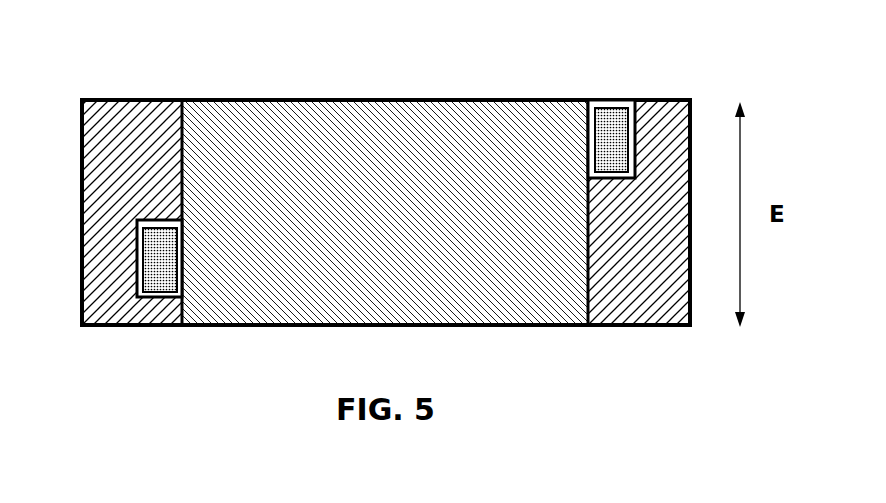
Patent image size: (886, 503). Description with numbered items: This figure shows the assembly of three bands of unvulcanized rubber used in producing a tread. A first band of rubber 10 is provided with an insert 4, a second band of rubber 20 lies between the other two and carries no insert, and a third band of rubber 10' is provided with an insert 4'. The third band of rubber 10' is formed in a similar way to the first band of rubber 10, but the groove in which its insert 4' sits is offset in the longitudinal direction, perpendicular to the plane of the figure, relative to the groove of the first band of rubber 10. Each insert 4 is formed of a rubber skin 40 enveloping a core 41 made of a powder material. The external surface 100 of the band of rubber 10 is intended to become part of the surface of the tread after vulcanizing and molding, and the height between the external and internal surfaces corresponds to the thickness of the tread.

The external surface 100 is at (135, 95).
The band of rubber 10 is at (126, 165).
The second band of rubber 20 is at (417, 160).
The third band of rubber 10' is at (684, 185).
The insert 4 is at (106, 282).
The insert 4' is at (626, 112).
The rubber skin 40 is at (171, 298).
The core 41 is at (156, 294).